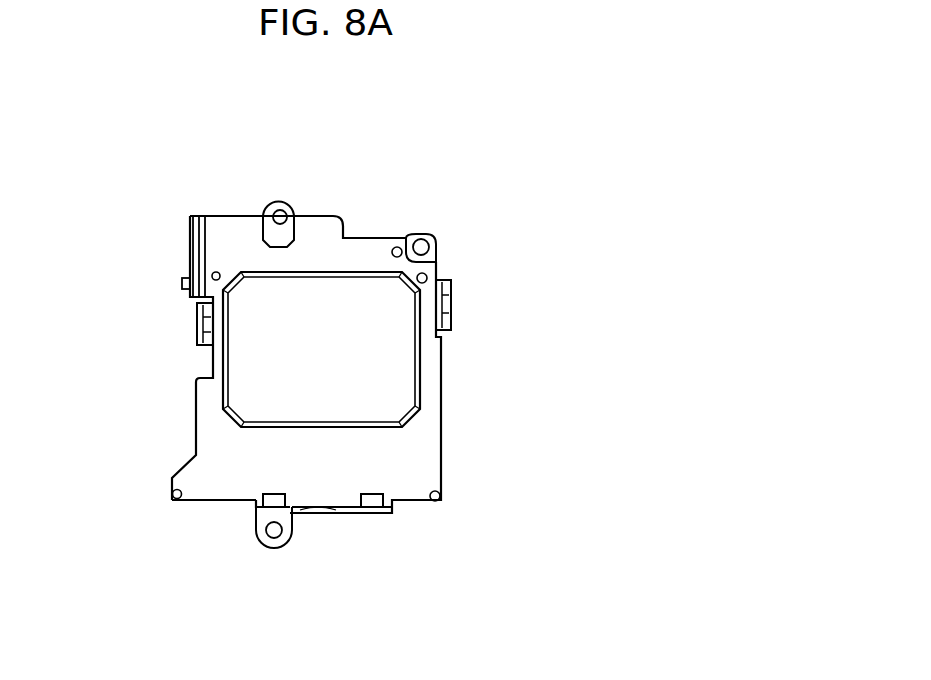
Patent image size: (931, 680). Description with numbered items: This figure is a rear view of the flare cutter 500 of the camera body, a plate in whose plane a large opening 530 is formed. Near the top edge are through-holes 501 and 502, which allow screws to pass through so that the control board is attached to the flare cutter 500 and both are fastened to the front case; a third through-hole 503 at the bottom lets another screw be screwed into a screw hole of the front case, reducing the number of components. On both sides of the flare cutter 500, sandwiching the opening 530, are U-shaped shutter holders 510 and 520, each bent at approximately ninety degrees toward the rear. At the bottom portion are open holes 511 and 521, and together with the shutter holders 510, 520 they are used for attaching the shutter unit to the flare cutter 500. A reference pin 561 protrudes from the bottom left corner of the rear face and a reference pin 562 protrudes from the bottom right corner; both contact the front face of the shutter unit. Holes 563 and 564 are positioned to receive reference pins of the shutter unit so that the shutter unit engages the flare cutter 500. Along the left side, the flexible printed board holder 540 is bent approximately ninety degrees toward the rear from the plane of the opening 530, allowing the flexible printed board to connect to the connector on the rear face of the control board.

The flare cutter 500 is at (540, 148).
The through-hole 501 is at (421, 247).
The through-hole 502 is at (280, 217).
The through-hole 503 is at (273, 532).
The shutter holder 510 is at (199, 320).
The open hole 511 is at (272, 500).
The shutter holder 520 is at (451, 290).
The open hole 521 is at (372, 502).
The opening 530 is at (340, 352).
The flexible printed board holder 540 is at (192, 238).
The reference pin 561 is at (175, 499).
The reference pin 562 is at (438, 498).
The hole 563 is at (213, 274).
The hole 564 is at (424, 278).